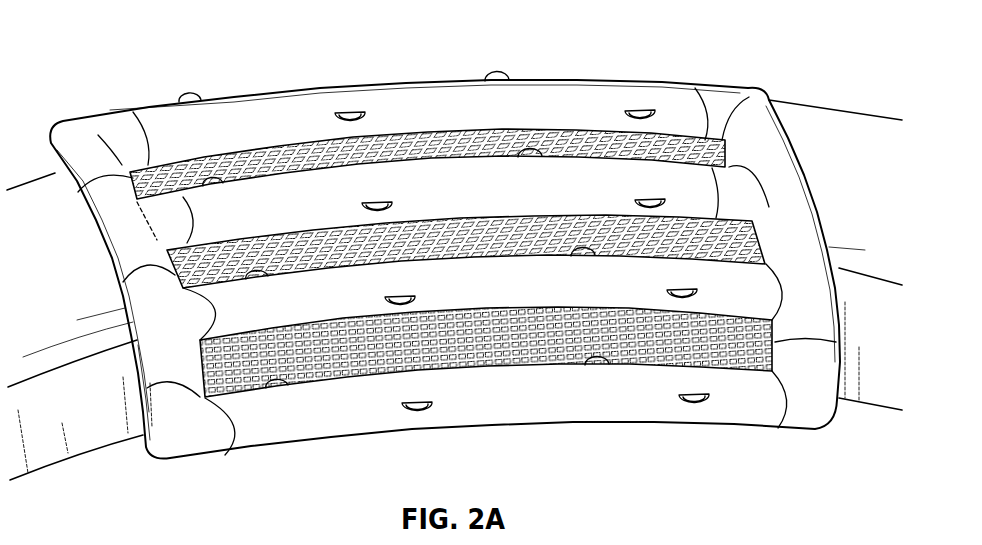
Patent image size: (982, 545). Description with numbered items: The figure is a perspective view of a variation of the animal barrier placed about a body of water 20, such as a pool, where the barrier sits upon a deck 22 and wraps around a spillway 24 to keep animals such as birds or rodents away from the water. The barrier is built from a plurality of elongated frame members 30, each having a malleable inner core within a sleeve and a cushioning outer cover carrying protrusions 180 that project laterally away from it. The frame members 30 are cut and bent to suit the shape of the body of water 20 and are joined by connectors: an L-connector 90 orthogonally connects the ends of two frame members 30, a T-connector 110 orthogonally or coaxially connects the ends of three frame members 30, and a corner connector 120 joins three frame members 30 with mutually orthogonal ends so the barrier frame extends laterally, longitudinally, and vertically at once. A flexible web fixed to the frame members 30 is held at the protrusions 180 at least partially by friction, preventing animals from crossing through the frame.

The body of water 20 is at (738, 462).
The deck 22 is at (40, 317).
The spillway 24 is at (613, 247).
The elongated frame member 30 is at (273, 200).
The L-connector 90 is at (70, 147).
The T-connector 110 is at (110, 235).
The corner connector 120 is at (157, 350).
The protrusion 180 is at (497, 72).